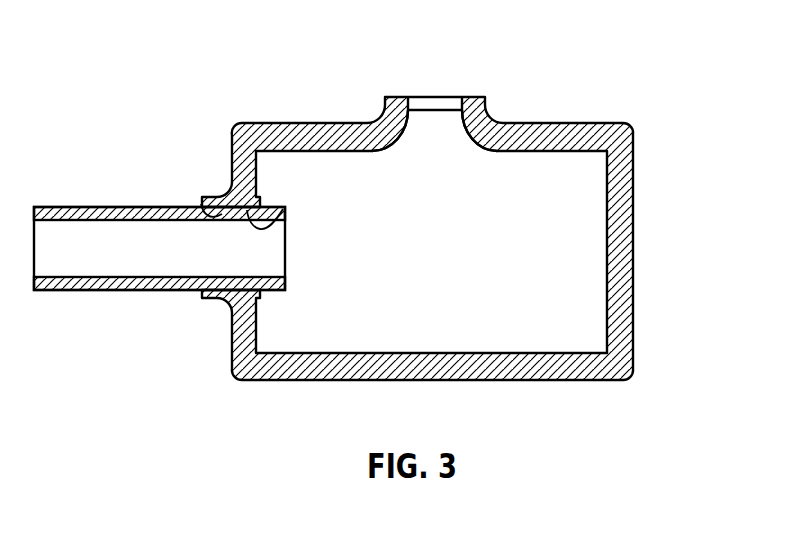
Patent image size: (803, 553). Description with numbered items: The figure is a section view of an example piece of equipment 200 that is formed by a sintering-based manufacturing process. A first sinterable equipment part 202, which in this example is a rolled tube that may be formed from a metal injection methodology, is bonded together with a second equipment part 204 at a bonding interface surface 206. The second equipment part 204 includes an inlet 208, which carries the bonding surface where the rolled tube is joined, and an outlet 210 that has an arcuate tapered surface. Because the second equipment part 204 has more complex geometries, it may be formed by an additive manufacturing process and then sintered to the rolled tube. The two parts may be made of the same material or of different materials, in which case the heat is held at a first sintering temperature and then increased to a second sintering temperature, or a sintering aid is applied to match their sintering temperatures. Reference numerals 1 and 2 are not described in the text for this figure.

The piece of equipment 200 is at (371, 195).
The housing 1 is at (436, 195).
The tube 2 is at (159, 195).
The first sinterable equipment part 202 is at (78, 207).
The second equipment part 204 is at (592, 122).
The bonding interface surface 206 is at (201, 204).
The inlet 208 is at (283, 209).
The outlet 210 is at (460, 97).